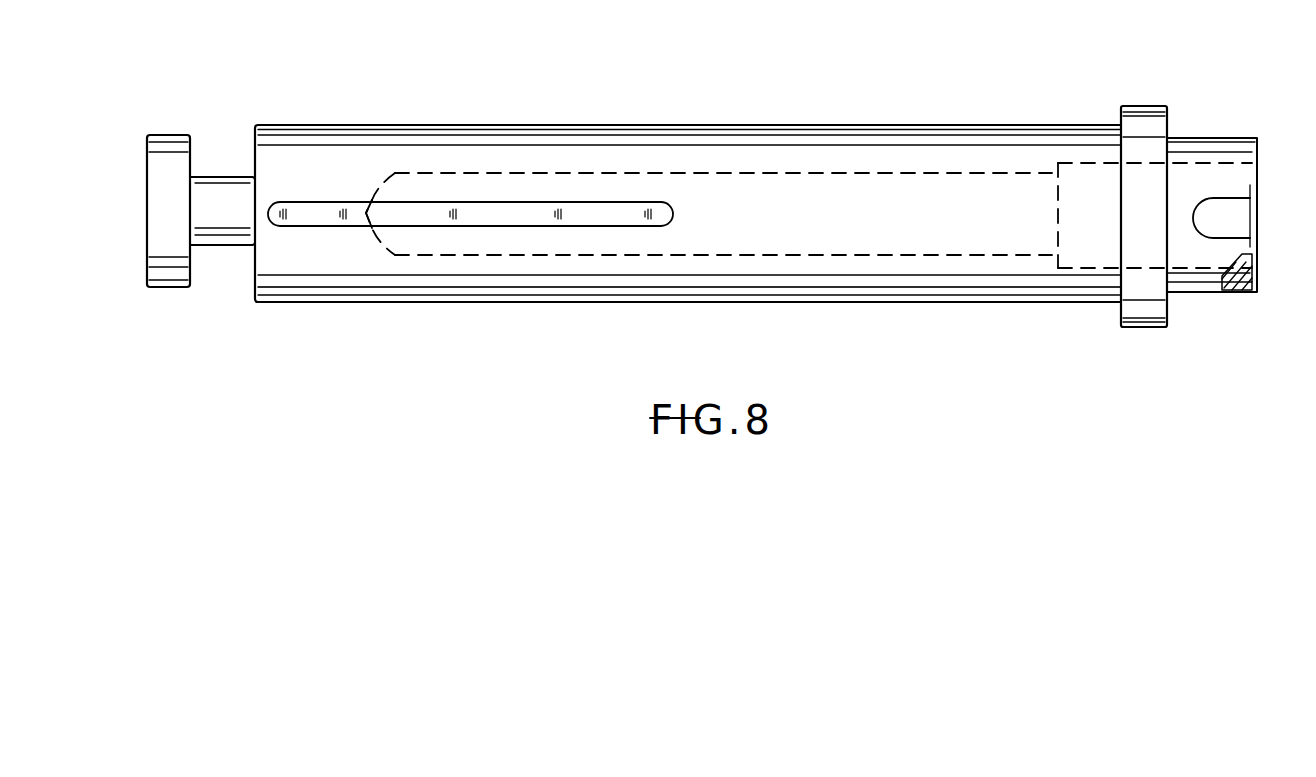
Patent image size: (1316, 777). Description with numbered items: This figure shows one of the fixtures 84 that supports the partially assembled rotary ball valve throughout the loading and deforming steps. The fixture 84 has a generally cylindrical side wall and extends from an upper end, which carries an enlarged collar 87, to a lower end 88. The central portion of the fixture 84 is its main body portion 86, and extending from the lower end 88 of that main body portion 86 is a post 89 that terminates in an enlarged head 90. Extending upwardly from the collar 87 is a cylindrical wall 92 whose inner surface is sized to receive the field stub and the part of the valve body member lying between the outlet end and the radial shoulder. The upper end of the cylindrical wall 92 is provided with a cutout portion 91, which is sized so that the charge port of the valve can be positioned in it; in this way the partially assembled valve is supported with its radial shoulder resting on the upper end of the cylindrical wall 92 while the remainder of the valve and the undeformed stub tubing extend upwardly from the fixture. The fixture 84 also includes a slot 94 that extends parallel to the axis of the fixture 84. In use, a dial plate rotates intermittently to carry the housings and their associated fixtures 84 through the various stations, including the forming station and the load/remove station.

The fixture 84 is at (613, 127).
The main body portion 86 is at (532, 280).
The enlarged collar 87 is at (1145, 310).
The lower end 88 is at (252, 283).
The post 89 is at (233, 192).
The enlarged head 90 is at (170, 162).
The cutout portion 91 is at (1223, 228).
The cylindrical wall 92 is at (1240, 294).
The slot 94 is at (480, 212).